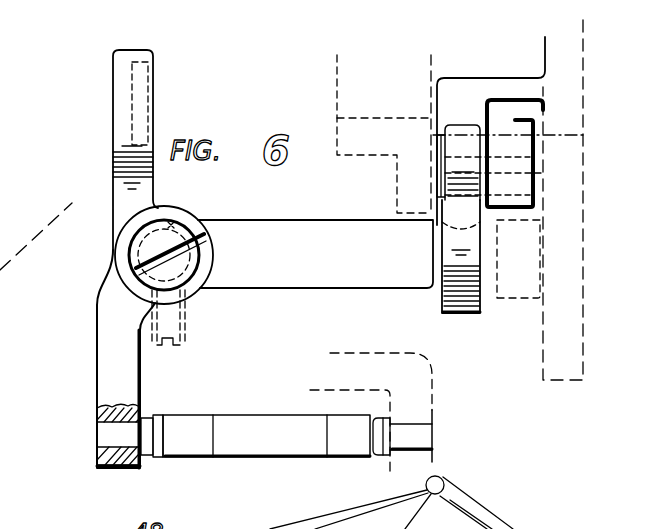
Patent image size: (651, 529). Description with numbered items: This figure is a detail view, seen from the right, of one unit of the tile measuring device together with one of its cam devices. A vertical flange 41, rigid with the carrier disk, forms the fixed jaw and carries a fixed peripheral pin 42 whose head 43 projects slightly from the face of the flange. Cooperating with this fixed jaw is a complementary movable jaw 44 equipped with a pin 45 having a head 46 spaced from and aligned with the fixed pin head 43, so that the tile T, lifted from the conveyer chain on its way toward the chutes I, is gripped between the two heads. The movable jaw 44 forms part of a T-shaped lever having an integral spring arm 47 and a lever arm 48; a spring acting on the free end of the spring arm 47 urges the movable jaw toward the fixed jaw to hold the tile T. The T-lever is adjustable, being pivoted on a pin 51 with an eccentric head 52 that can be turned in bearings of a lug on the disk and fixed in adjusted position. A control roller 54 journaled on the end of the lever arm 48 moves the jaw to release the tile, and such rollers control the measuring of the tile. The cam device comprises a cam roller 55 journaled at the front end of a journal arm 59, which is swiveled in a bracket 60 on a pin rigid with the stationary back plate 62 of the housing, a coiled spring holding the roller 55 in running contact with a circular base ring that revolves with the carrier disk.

The vertical flange 41 is at (447, 392).
The fixed peripheral pin 42 is at (420, 437).
The head 43 is at (380, 455).
The movable jaw 44 is at (98, 470).
The pin 45 is at (102, 427).
The head 46 is at (156, 455).
The spring arm 47 is at (112, 176).
The lever arm 48 is at (326, 282).
The pin 51 is at (173, 226).
The eccentric head 52 is at (143, 280).
The control roller 54 is at (472, 318).
The cam roller 55 is at (455, 125).
The journal arm 59 is at (520, 185).
The bracket 60 is at (495, 63).
The stationary back plate 62 is at (600, 259).
The tile T is at (252, 418).
The chute I is at (504, 506).